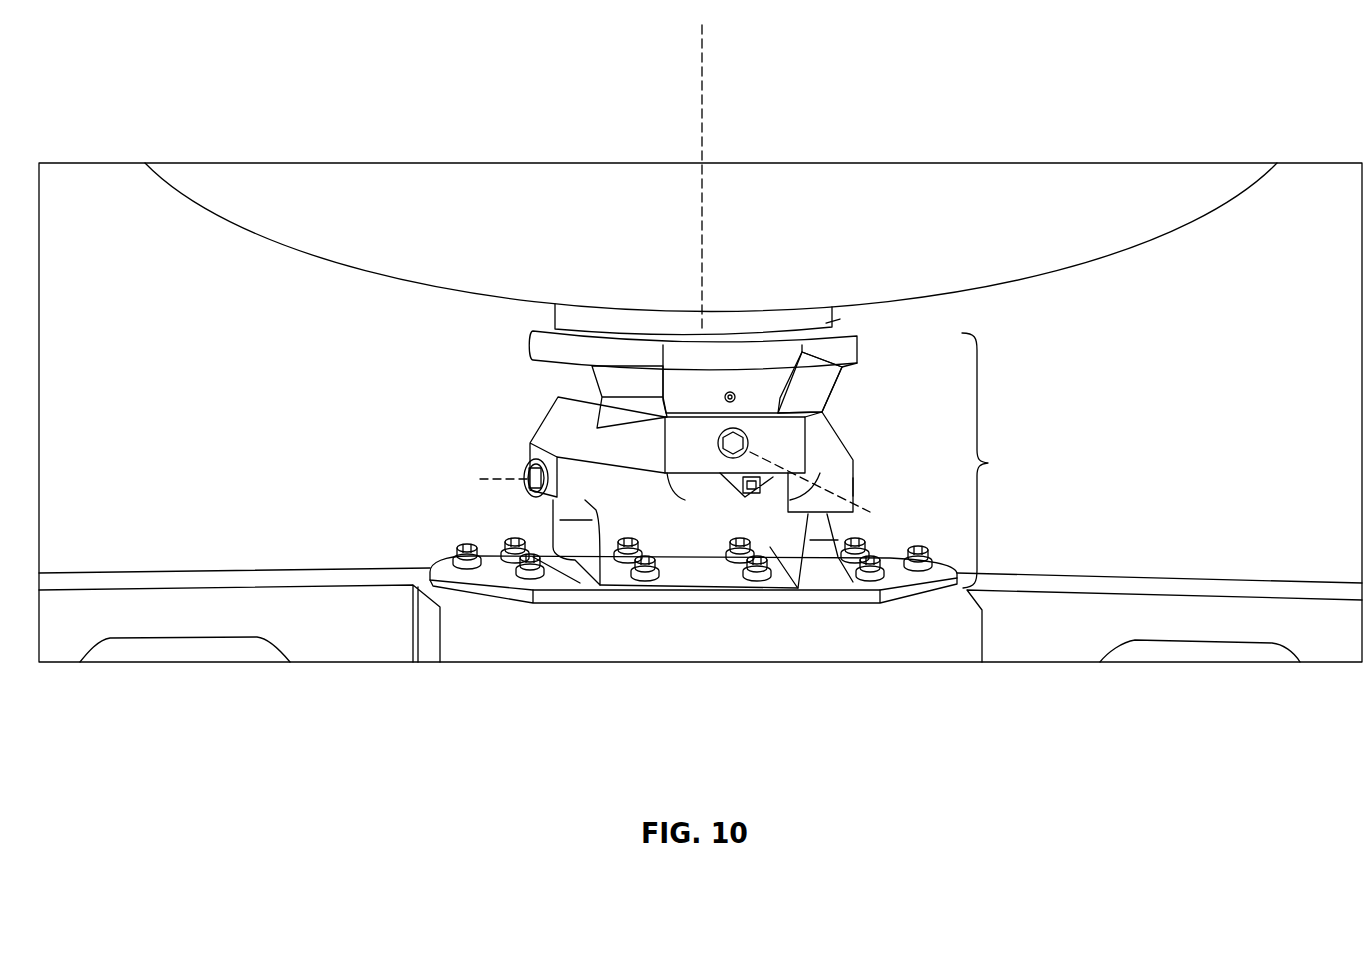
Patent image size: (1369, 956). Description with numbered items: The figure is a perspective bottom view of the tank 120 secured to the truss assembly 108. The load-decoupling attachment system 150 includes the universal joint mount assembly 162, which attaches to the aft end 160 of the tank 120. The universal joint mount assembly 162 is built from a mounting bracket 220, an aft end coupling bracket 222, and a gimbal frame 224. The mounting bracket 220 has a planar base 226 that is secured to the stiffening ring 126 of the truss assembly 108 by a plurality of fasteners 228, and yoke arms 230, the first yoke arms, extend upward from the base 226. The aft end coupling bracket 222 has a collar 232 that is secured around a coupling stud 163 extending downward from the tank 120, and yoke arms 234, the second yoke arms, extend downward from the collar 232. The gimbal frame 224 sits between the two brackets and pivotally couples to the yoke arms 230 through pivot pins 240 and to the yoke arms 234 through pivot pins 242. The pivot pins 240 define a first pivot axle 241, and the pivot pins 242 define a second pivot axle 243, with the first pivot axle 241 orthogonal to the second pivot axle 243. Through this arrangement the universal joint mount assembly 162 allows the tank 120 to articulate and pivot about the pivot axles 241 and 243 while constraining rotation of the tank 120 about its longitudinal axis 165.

The truss assembly 108 is at (1244, 566).
The tank 120 is at (1135, 235).
The stiffening ring 126 is at (1058, 570).
The load-decoupling attachment system 150 is at (462, 514).
The aft end 160 is at (548, 308).
The universal joint mount assembly 162 is at (1001, 460).
The coupling stud 163 is at (835, 326).
The longitudinal axis 165 is at (703, 42).
The mounting bracket 220 is at (895, 550).
The aft end coupling bracket 222 is at (843, 358).
The gimbal frame 224 is at (855, 462).
The planar base 226 is at (677, 572).
The fasteners 228 is at (515, 562).
The yoke arms 230 is at (600, 537).
The collar 232 is at (858, 345).
The yoke arms 234 is at (592, 376).
The pivot pins 240 is at (525, 476).
The first pivot axle 241 is at (490, 485).
The pivot pins 242 is at (748, 443).
The second pivot axle 243 is at (834, 493).